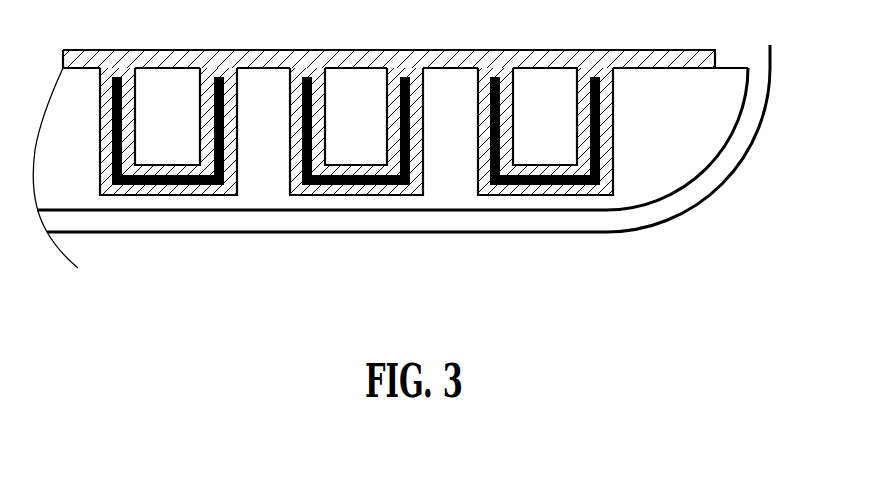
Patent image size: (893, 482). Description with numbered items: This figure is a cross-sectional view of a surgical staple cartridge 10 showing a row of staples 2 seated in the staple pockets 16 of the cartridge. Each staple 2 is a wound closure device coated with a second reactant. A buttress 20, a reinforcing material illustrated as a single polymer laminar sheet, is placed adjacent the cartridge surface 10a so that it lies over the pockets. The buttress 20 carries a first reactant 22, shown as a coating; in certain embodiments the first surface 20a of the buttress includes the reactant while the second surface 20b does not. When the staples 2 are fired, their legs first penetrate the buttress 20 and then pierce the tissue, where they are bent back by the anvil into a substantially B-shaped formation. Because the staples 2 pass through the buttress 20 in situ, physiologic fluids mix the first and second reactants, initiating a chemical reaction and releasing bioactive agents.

The staple 2 is at (110, 88).
The staple cartridge 10 is at (703, 193).
The cartridge surface 10a is at (691, 68).
The staple pockets 16 is at (158, 195).
The buttress 20 is at (692, 56).
The first surface 20a is at (726, 166).
The second surface 20b is at (568, 48).
The first reactant 22 is at (146, 49).